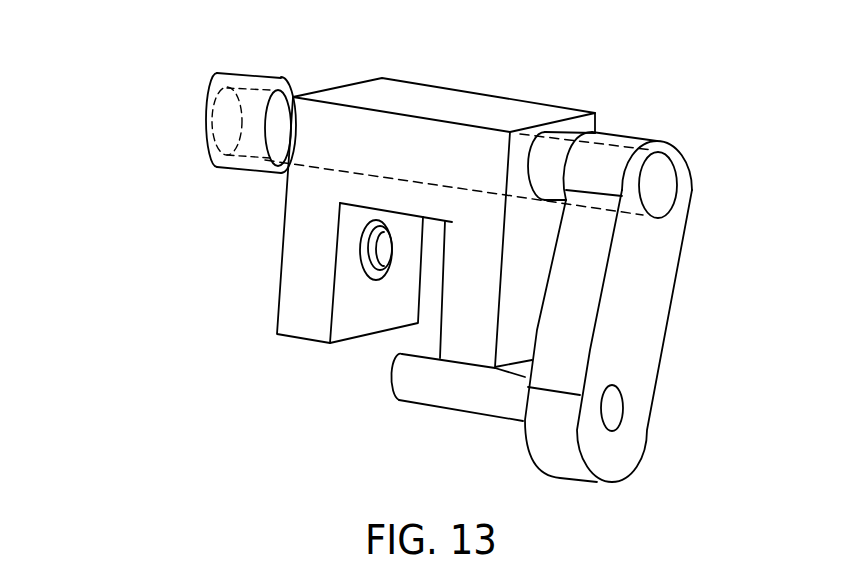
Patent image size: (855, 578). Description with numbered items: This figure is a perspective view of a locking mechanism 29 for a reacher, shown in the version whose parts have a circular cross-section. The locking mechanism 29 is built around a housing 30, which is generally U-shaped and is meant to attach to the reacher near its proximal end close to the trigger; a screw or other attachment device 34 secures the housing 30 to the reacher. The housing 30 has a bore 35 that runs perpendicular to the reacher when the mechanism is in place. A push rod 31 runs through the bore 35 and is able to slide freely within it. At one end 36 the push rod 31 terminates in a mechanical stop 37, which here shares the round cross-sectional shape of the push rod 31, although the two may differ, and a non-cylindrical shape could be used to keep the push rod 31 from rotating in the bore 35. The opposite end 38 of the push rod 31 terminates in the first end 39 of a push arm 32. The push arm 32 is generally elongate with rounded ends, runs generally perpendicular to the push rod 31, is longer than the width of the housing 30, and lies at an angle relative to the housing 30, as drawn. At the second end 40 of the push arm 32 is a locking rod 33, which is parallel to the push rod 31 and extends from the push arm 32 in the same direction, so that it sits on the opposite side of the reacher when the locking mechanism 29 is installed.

The locking mechanism 29 is at (133, 149).
The housing 30 is at (445, 102).
The push rod 31 is at (562, 148).
The push arm 32 is at (645, 332).
The locking rod 33 is at (403, 387).
The attachment device 34 is at (370, 255).
The bore 35 is at (540, 130).
The one end of the push rod 36 is at (270, 88).
The mechanical stop 37 is at (203, 95).
The opposite end of the push rod 38 is at (660, 197).
The first end of the push arm 39 is at (632, 143).
The second end of the push arm 40 is at (607, 458).